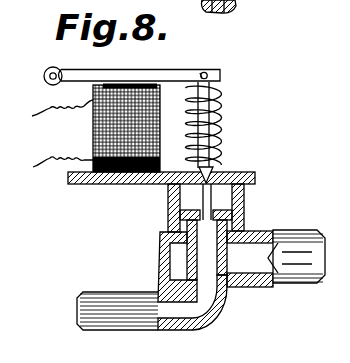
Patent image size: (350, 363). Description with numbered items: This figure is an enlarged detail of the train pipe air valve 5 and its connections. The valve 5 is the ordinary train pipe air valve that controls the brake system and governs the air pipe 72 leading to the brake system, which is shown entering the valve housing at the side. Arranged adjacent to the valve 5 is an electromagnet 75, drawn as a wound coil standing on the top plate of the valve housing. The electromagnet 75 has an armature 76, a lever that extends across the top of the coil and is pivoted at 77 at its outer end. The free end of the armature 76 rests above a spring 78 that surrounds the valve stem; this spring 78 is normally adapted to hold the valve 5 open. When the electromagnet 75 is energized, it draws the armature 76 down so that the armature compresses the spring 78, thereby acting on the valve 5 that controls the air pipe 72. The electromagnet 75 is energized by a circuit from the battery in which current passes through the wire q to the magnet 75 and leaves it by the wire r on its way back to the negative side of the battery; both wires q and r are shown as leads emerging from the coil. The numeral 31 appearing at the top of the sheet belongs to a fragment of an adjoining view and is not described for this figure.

The train pipe air valve 5 is at (214, 153).
The adjacent figure part 31 is at (198, 13).
The air pipe 72 is at (292, 232).
The electromagnet 75 is at (93, 129).
The armature 76 is at (179, 71).
The pivot 77 is at (47, 71).
The spring 78 is at (221, 98).
The wire r is at (54, 110).
The wire q is at (53, 175).